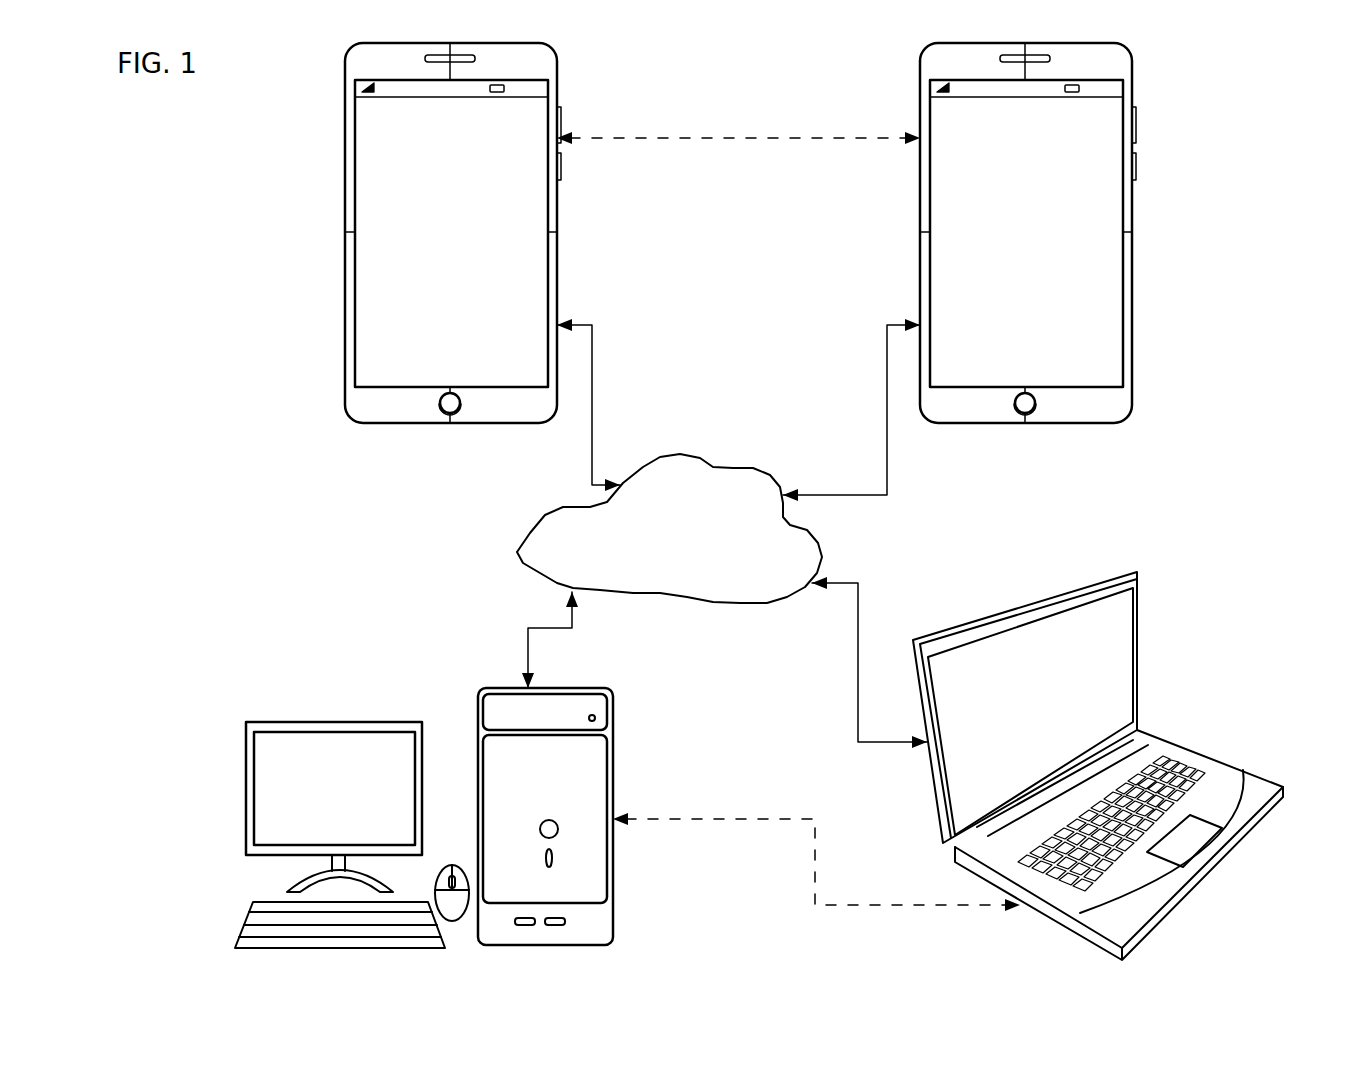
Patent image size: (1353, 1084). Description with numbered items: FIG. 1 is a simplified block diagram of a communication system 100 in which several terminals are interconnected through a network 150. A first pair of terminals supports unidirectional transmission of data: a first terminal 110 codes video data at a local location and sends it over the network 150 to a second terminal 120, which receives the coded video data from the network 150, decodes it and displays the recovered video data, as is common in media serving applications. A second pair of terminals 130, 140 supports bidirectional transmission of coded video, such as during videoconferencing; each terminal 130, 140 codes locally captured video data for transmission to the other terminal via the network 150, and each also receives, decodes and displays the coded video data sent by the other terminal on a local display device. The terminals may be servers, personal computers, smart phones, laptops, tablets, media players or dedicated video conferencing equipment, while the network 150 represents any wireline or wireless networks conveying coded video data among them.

The communication system 100 is at (265, 115).
The first terminal 110 is at (1138, 630).
The second terminal 120 is at (610, 905).
The terminal 130 is at (415, 233).
The terminal 140 is at (920, 165).
The network 150 is at (648, 526).